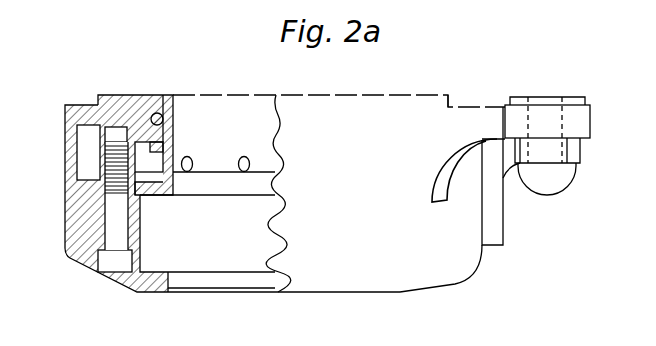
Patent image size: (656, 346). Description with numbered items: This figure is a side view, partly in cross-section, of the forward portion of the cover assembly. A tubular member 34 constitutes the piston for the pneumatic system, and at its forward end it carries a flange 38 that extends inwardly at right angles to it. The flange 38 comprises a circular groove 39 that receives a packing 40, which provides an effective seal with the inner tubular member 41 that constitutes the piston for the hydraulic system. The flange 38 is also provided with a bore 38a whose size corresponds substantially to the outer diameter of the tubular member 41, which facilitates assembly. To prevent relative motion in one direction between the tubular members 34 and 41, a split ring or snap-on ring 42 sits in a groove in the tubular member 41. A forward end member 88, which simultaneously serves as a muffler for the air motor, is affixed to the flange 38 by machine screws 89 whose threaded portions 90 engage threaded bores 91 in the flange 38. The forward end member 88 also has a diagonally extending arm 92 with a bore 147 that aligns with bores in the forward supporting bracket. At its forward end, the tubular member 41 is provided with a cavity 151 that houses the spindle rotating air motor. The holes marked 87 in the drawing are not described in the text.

The tubular member 34 is at (110, 113).
The flange 38 is at (100, 112).
The bore 38a is at (163, 135).
The circular groove 39 is at (153, 115).
The packing 40 is at (157, 112).
The tubular member 41 is at (167, 131).
The split ring 42 is at (165, 145).
The holes 87 is at (172, 163).
The forward end member 88 is at (67, 255).
The machine screws 89 is at (118, 267).
The threaded portions 90 is at (113, 162).
The threaded bores 91 is at (110, 150).
The diagonally extending arm 92 is at (472, 125).
The bore 147 is at (563, 113).
The cavity 151 is at (250, 112).